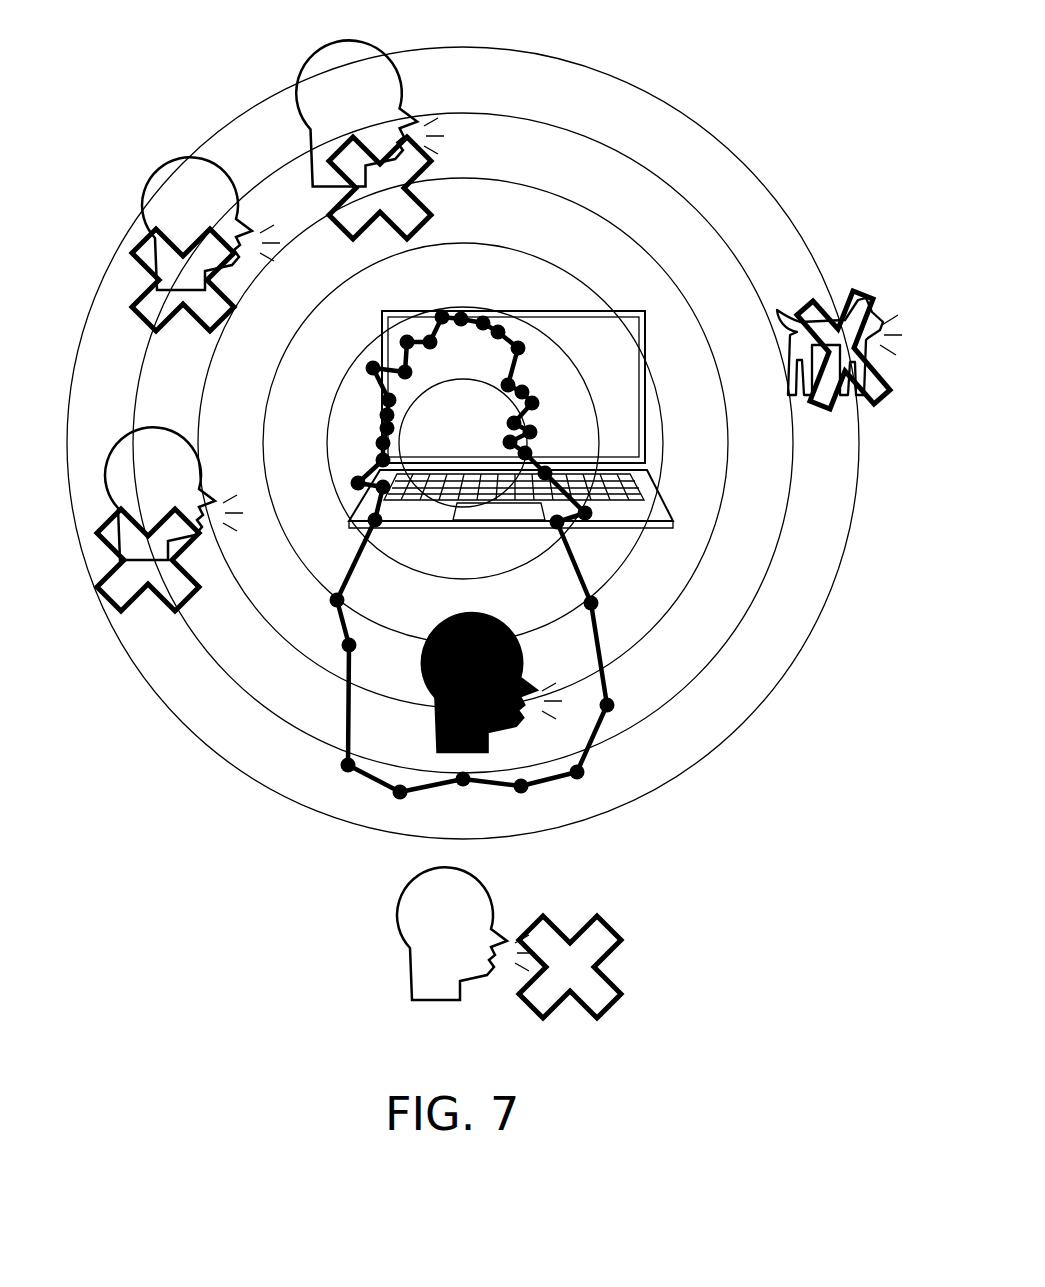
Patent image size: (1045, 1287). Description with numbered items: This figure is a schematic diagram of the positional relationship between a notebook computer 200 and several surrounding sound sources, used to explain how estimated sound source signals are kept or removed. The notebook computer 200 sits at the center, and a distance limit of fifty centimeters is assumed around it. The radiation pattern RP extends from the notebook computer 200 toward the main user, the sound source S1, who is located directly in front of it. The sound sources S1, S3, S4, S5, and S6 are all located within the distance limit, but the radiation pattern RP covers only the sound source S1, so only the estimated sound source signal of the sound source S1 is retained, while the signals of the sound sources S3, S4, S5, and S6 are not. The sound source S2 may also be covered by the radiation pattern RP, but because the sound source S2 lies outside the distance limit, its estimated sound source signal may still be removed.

The notebook computer 200 is at (539, 304).
The radiation pattern RP is at (348, 712).
The sound source S1 is at (445, 728).
The sound source S2 is at (412, 983).
The sound source S3 is at (202, 470).
The sound source S4 is at (222, 168).
The sound source S5 is at (406, 90).
The sound source S6 is at (848, 300).